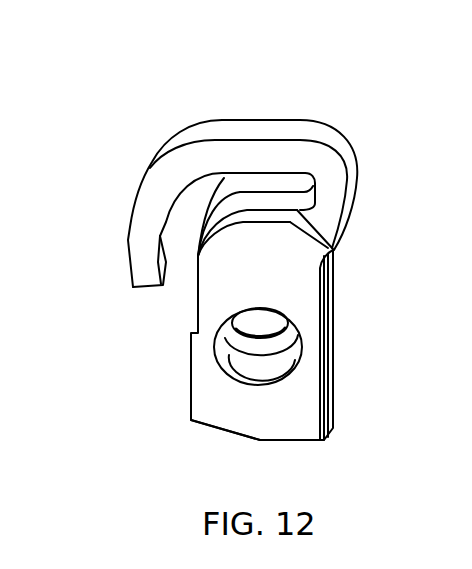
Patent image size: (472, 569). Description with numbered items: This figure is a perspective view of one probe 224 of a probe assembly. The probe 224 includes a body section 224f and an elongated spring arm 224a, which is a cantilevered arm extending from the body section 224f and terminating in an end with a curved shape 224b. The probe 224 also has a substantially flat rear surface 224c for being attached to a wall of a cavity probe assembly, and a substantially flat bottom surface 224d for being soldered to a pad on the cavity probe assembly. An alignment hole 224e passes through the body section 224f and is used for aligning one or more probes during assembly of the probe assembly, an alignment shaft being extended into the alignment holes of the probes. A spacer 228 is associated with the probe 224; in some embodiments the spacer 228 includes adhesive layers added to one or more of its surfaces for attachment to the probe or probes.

The probe 224 is at (333, 72).
The elongated spring arm 224a is at (258, 118).
The curved shape 224b is at (128, 232).
The substantially flat rear surface 224c is at (323, 380).
The substantially flat bottom surface 224d is at (288, 441).
The alignment hole 224e is at (238, 357).
The body section 224f is at (205, 308).
The spacer 228 is at (322, 250).